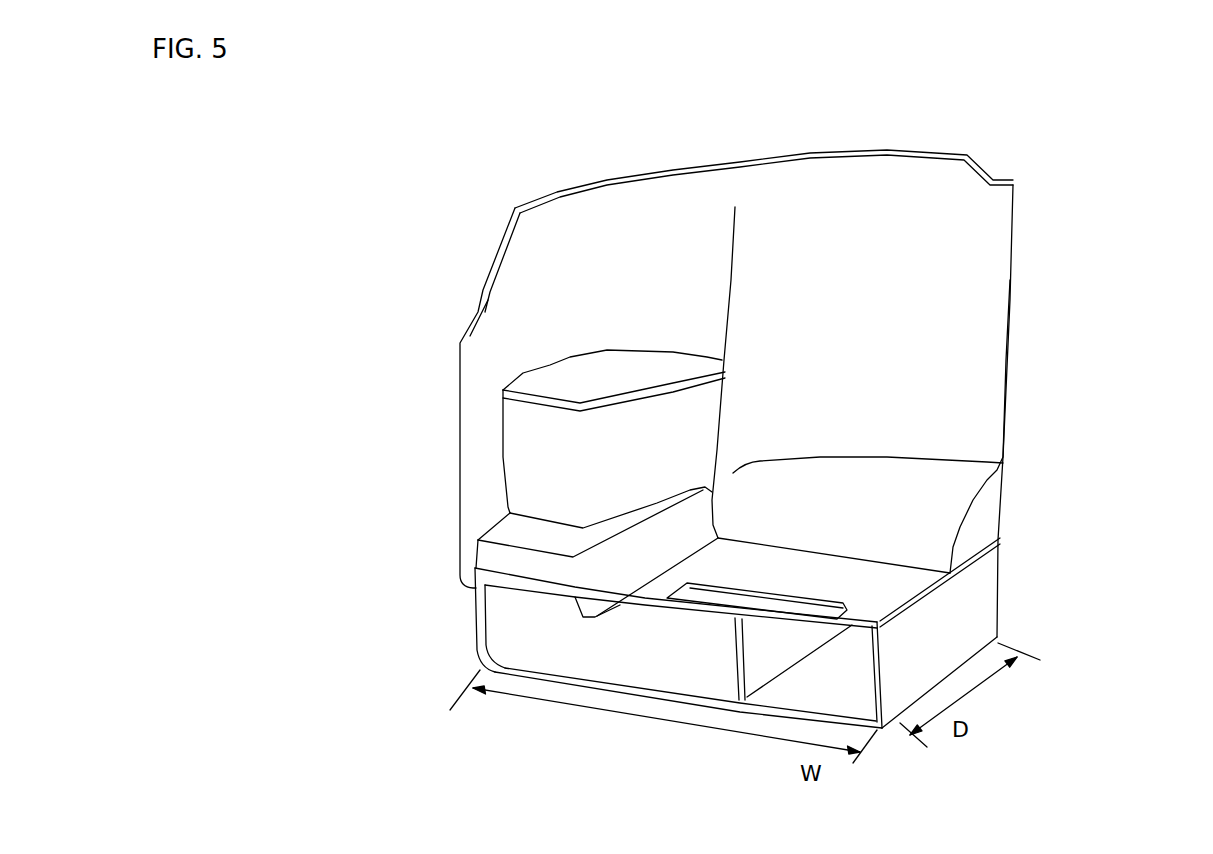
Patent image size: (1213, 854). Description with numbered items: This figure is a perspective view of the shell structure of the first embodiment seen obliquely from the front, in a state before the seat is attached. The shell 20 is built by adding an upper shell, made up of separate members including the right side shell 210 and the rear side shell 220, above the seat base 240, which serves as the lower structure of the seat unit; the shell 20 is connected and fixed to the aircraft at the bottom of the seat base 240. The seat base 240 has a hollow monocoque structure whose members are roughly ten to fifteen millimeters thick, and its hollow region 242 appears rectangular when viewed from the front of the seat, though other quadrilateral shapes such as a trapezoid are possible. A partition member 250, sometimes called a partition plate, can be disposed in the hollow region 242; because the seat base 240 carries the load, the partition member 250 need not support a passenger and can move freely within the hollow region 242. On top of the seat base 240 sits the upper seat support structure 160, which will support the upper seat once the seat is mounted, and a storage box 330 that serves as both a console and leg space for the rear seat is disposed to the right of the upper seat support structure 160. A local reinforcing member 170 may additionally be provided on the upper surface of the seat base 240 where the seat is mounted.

The shell 20 is at (987, 120).
The upper seat support structure 160 is at (797, 570).
The local reinforcing member 170 is at (790, 613).
The right side shell 210 is at (478, 300).
The rear side shell 220 is at (812, 148).
The seat base 240 is at (937, 636).
The hollow region 242 is at (532, 628).
The partition member 250 is at (743, 712).
The storage box 330 is at (577, 378).